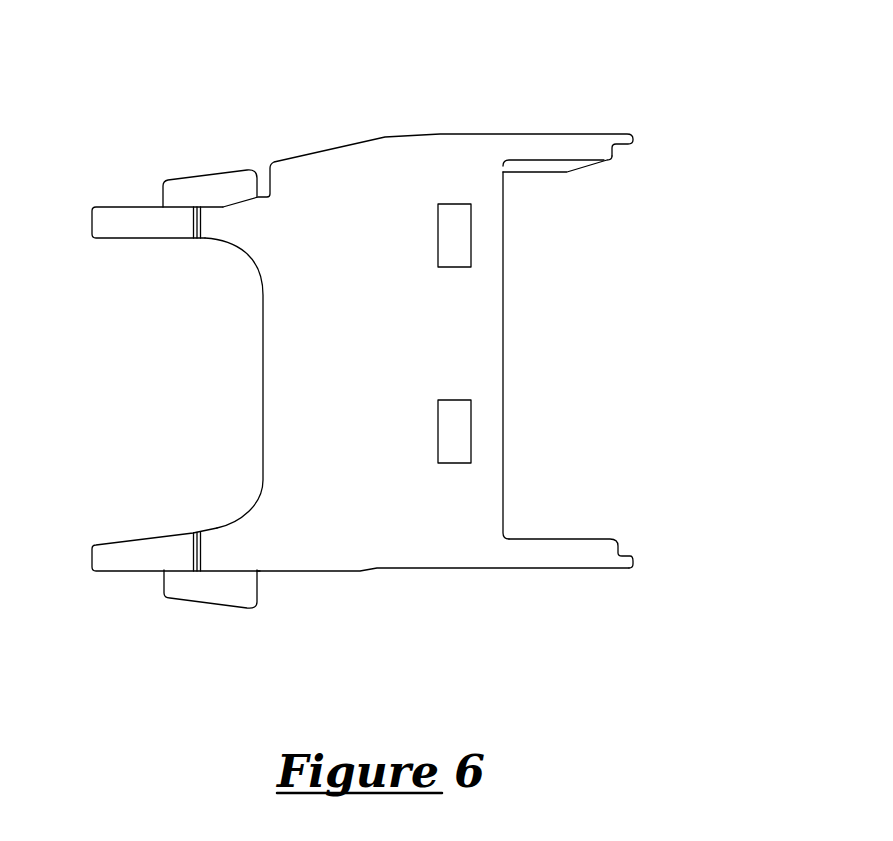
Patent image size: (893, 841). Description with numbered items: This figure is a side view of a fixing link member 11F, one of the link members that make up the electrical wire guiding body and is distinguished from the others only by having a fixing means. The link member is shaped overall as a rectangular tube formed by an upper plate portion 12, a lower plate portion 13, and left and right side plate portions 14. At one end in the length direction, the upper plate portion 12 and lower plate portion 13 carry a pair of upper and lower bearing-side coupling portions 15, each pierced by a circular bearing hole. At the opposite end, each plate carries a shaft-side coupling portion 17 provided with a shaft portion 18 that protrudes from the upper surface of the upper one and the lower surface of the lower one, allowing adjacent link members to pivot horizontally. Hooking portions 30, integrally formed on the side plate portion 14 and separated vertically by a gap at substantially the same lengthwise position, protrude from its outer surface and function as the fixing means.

The fixing link member 11F is at (492, 85).
The upper plate portion 12 is at (357, 142).
The lower plate portion 13 is at (390, 567).
The side plate portion 14 is at (427, 330).
The bearing-side coupling portion 15 is at (573, 137).
The shaft-side coupling portion 17 is at (110, 223).
The shaft portion 18 is at (188, 188).
The hooking portion 30 is at (458, 230).